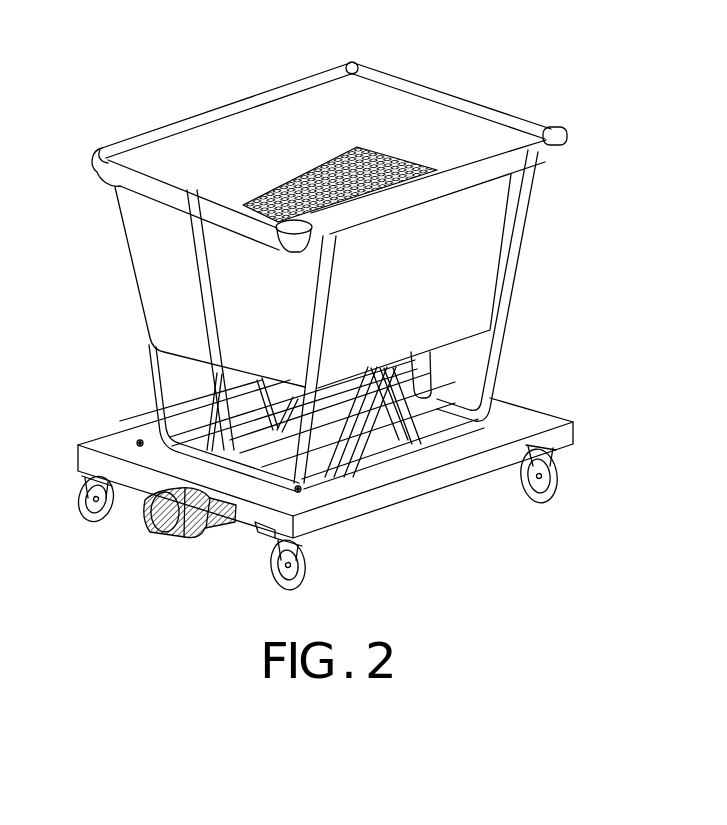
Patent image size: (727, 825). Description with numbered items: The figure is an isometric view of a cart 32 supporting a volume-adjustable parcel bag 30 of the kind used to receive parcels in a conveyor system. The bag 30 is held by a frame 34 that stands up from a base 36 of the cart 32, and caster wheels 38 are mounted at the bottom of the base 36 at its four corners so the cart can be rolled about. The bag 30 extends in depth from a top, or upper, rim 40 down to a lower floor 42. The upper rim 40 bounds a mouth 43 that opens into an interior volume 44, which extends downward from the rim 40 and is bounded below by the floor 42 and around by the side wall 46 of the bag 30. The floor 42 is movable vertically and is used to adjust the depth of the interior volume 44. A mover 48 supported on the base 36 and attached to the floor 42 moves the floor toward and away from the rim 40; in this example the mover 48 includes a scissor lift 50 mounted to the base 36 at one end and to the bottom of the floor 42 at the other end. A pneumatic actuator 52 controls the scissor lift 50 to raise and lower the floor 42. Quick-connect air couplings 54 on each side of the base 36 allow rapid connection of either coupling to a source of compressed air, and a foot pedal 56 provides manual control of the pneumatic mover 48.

The bag 30 is at (153, 243).
The cart 32 is at (131, 112).
The frame 34 is at (497, 362).
The base 36 is at (567, 443).
The caster wheels 38 is at (547, 493).
The upper rim 40 is at (118, 190).
The floor 42 is at (340, 182).
The mouth 43 is at (304, 110).
The interior volume 44 is at (229, 182).
The side wall 46 is at (482, 287).
The mover 48 is at (350, 443).
The scissor lift 50 is at (410, 442).
The pneumatic actuator 52 is at (260, 527).
The quick-connect air couplings 54 is at (138, 437).
The foot pedal 56 is at (153, 520).